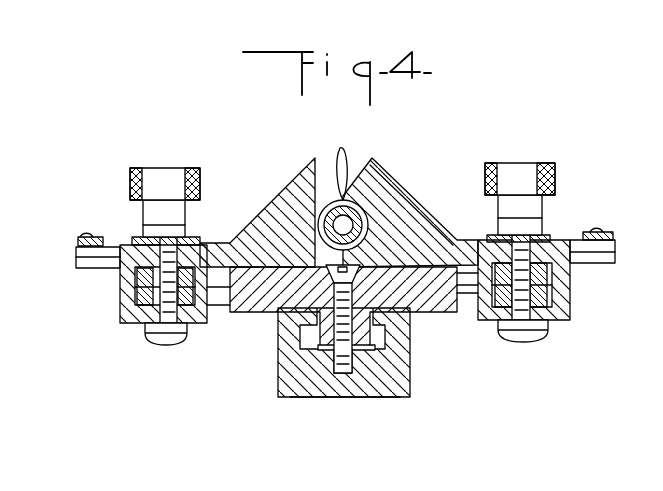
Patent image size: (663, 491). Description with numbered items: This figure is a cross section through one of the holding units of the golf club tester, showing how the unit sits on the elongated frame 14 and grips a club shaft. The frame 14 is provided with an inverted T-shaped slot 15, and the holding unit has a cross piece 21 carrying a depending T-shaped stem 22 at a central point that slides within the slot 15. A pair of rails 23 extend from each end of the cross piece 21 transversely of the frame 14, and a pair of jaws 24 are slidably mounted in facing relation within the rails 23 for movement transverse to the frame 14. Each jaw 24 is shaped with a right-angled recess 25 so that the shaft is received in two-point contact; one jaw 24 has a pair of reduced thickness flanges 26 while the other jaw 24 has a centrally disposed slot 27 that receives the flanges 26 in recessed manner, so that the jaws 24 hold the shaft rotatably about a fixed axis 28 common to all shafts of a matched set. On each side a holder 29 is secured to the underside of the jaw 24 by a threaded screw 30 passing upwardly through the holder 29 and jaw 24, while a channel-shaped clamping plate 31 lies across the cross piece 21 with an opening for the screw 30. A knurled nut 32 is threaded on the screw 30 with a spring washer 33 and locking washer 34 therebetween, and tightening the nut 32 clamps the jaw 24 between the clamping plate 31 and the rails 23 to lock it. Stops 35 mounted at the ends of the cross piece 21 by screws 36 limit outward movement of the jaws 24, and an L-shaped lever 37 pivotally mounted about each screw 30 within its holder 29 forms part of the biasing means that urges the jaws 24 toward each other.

The frame 14 is at (397, 385).
The inverted T-shaped slot 15 is at (380, 343).
The cross piece 21 is at (255, 305).
The T-shaped stem 22 is at (310, 340).
The rails 23 is at (80, 266).
The jaw 24 is at (275, 195).
The right-angled recess 25 is at (344, 168).
The reduced thickness flanges 26 is at (381, 178).
The slot 27 is at (316, 158).
The fixed axis 28 is at (332, 226).
The holder 29 is at (120, 313).
The threaded screw 30 is at (152, 347).
The clamping plate 31 is at (133, 238).
The knurled nut 32 is at (138, 167).
The spring washer 33 is at (183, 225).
The locking washer 34 is at (196, 237).
The stops 35 is at (70, 238).
The screws 36 is at (88, 236).
The L-shaped lever 37 is at (218, 300).